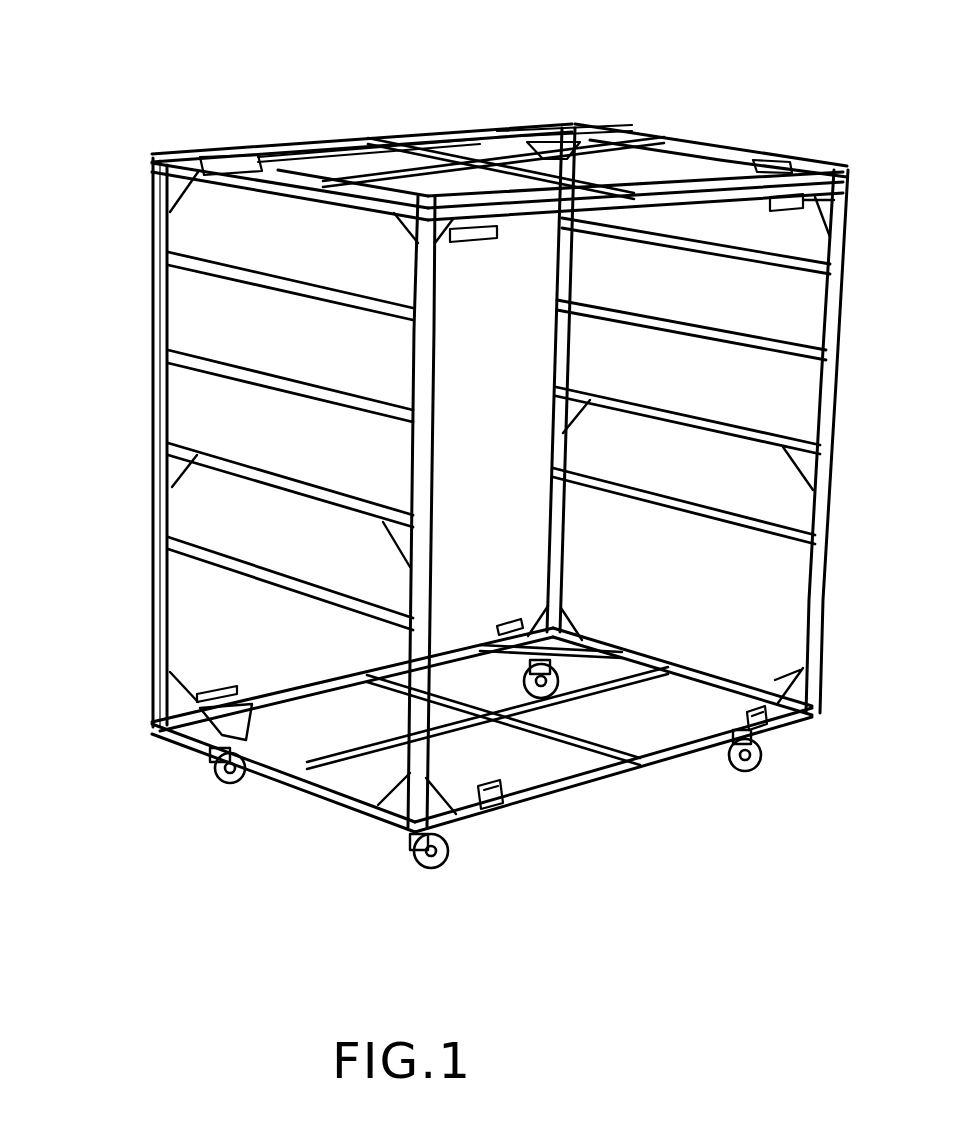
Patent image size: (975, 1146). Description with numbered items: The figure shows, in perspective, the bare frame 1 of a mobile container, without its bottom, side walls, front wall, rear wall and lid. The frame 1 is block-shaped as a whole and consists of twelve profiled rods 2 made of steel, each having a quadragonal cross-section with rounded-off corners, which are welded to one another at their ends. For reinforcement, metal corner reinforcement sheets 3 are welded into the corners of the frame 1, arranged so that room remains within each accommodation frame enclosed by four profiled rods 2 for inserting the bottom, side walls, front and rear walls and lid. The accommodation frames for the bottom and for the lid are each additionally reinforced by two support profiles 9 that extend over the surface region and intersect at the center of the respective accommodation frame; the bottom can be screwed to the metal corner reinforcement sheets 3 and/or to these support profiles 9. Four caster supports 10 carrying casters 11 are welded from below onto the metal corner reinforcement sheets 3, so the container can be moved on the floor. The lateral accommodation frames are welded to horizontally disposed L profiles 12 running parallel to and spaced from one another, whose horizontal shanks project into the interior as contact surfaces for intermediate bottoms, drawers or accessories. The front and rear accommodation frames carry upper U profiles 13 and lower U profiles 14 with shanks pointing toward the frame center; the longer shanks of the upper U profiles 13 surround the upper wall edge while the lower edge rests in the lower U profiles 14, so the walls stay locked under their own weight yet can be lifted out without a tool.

The frame 1 is at (114, 124).
The profiled rods 2 is at (357, 147).
The metal corner reinforcement sheets 3 is at (177, 187).
The support profiles 9 is at (450, 155).
The caster supports 10 is at (408, 853).
The casters 11 is at (432, 860).
The L profiles 12 is at (207, 265).
The upper U profiles 13 is at (763, 725).
The lower U profiles 14 is at (298, 170).